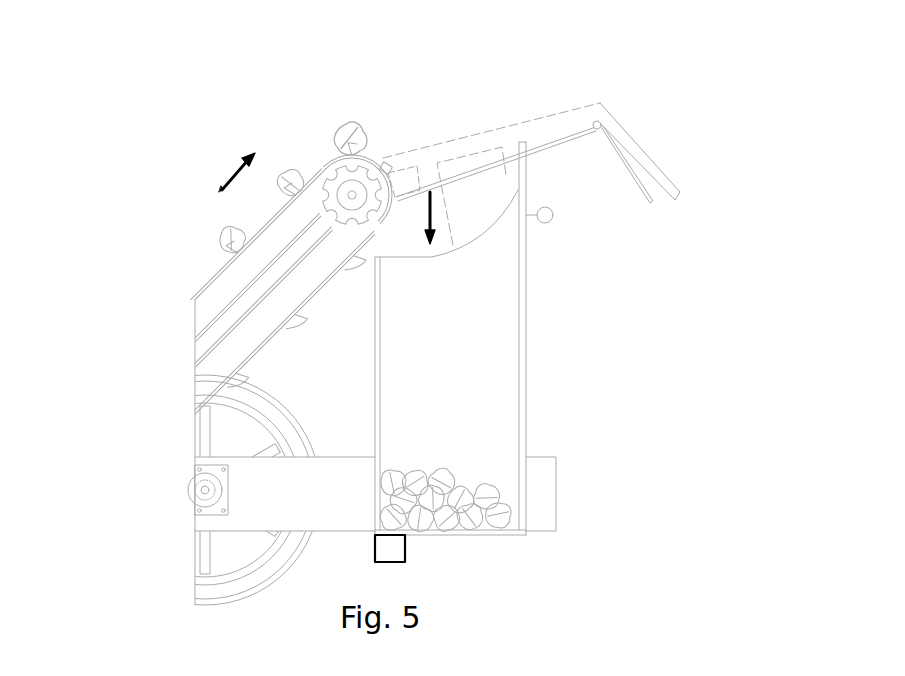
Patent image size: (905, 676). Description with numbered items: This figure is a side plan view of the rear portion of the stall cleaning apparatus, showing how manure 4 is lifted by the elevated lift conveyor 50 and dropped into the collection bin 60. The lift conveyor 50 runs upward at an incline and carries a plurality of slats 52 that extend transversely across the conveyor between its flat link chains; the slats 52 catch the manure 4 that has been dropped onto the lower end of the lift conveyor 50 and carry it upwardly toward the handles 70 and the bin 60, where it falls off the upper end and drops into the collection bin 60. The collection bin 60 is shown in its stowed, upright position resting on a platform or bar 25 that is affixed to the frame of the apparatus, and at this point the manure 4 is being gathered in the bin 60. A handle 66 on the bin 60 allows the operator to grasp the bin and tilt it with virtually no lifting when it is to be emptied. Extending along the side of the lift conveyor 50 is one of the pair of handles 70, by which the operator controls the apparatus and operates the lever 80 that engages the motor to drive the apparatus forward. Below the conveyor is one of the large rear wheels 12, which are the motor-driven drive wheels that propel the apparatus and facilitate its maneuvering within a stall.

The manure 4 is at (217, 236).
The rear wheels 12 is at (237, 443).
The platform or bar 25 is at (383, 563).
The lift conveyor 50 is at (205, 296).
The slats 52 is at (276, 178).
The collection bin 60 is at (523, 387).
The handle 66 is at (550, 223).
The handles 70 is at (546, 120).
The lever 80 is at (651, 208).